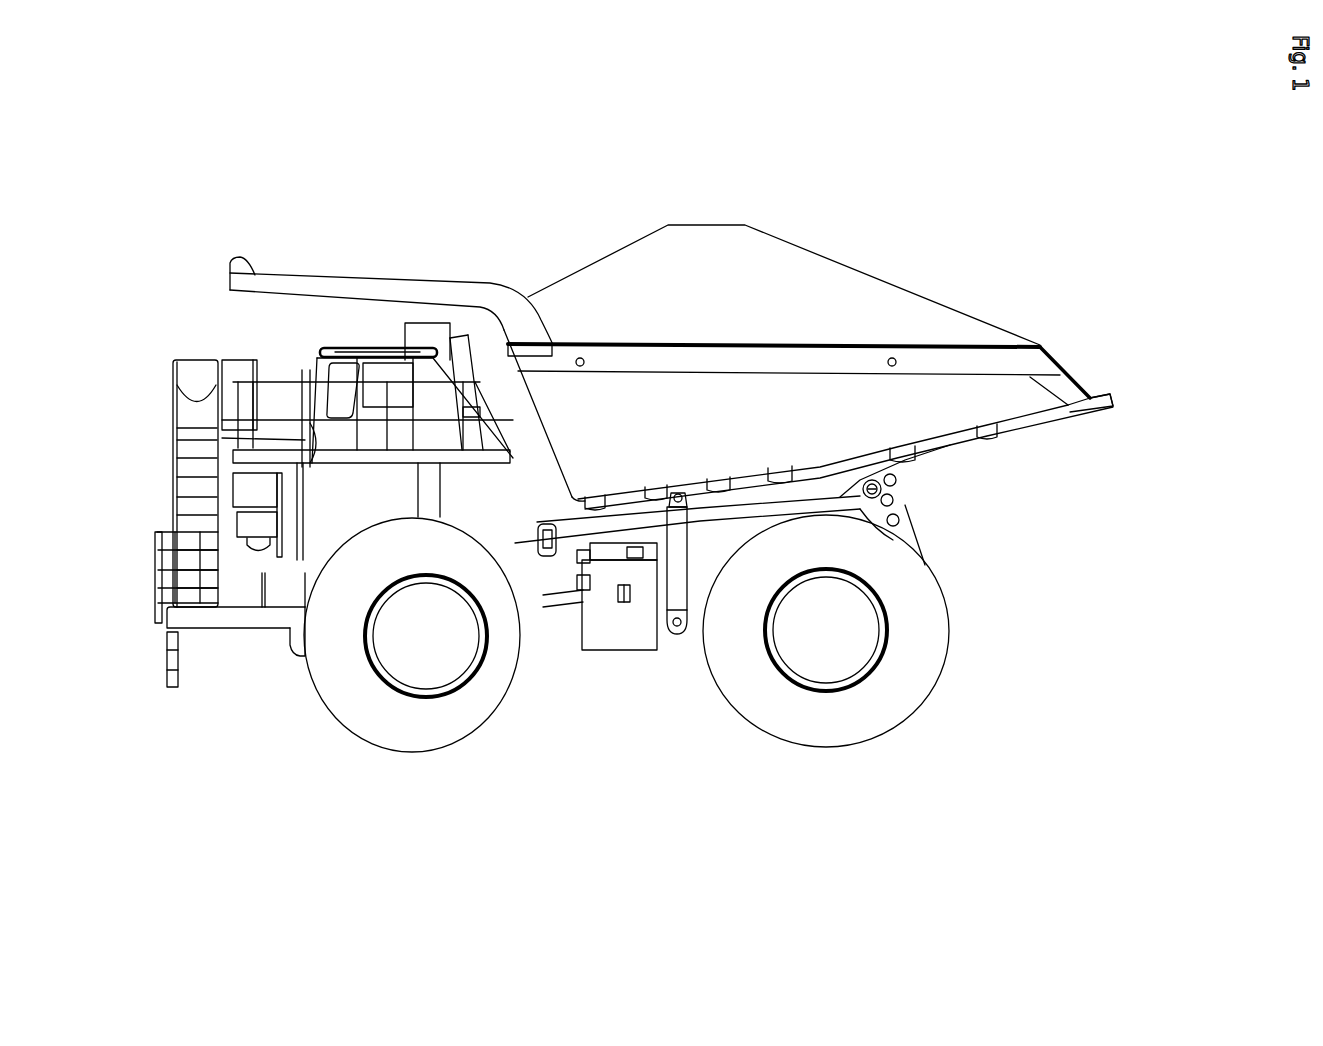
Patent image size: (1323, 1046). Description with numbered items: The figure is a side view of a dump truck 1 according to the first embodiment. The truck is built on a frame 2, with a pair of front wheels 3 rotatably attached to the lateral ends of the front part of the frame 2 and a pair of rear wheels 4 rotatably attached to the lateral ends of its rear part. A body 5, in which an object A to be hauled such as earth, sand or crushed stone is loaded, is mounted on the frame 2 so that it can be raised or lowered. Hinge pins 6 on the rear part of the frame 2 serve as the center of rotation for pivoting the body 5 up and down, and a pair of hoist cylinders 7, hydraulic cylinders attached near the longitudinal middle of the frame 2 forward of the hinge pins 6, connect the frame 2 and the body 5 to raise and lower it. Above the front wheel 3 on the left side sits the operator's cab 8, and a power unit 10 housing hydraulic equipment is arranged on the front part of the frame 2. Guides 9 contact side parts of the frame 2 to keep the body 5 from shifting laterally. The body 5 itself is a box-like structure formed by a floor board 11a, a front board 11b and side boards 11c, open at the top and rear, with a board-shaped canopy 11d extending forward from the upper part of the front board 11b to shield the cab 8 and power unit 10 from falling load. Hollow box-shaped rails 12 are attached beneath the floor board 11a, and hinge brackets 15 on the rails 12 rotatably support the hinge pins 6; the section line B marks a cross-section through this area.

The dump truck 1 is at (996, 262).
The frame 2 is at (552, 573).
The front wheels 3 is at (368, 712).
The rear wheels 4 is at (880, 718).
The body 5 is at (1056, 343).
The hinge pins 6 is at (900, 497).
The hoist cylinders 7 is at (677, 628).
The operator's cab 8 is at (315, 356).
The guides 9 is at (545, 545).
The power unit 10 is at (320, 533).
The floor board 11a is at (945, 432).
The front board 11b is at (543, 433).
The side boards 11c is at (807, 418).
The canopy 11d is at (383, 281).
The rails 12 is at (597, 545).
The hinge brackets 15 is at (900, 487).
The object to be hauled A is at (767, 258).
The section line B- B is at (724, 515).